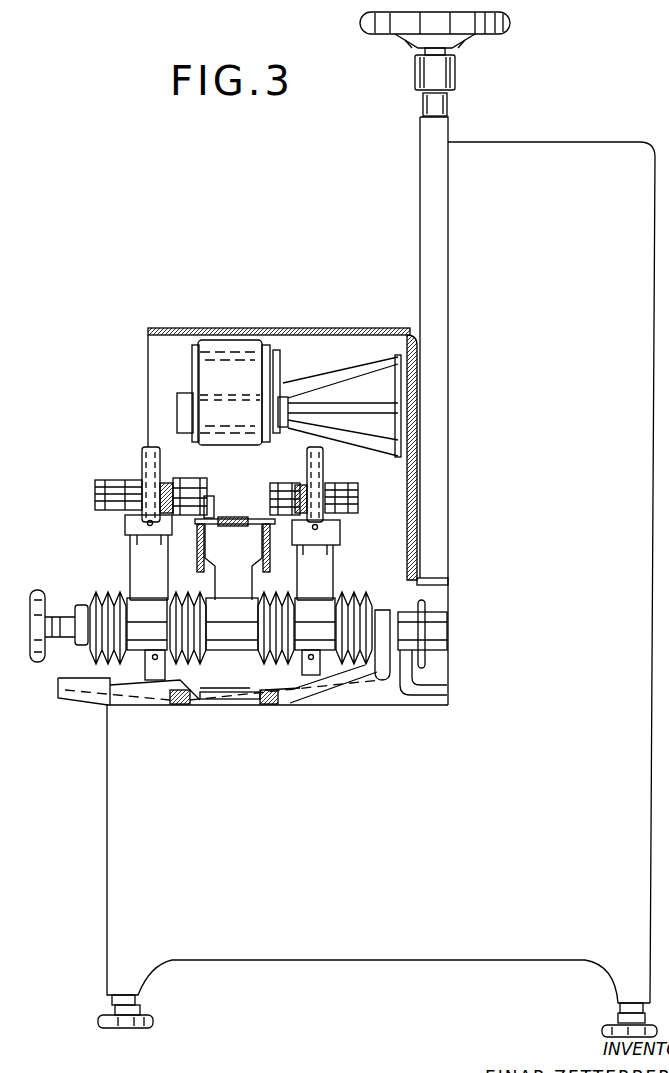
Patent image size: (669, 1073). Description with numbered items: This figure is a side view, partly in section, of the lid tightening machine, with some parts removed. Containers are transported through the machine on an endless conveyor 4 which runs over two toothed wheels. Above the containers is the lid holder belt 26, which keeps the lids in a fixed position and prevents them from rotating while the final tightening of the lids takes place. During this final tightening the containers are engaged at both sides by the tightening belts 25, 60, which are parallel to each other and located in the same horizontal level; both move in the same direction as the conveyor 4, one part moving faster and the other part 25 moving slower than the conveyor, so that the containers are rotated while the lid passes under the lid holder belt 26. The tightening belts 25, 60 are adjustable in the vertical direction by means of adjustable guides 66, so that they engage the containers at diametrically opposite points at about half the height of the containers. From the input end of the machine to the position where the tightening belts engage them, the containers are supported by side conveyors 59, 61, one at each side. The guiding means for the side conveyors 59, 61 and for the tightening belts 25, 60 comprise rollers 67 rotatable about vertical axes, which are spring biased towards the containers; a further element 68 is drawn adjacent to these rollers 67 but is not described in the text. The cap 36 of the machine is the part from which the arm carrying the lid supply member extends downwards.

The endless conveyor 4 is at (236, 524).
The tightening belt 25 is at (258, 521).
The lid holder belt 26 is at (220, 340).
The cap 36 is at (305, 330).
The side conveyor 59 is at (300, 492).
The tightening belt 60 is at (210, 497).
The side conveyor 61 is at (210, 493).
The adjustable guide 66 is at (140, 507).
The roller 67 is at (177, 488).
The gear 68 is at (187, 480).